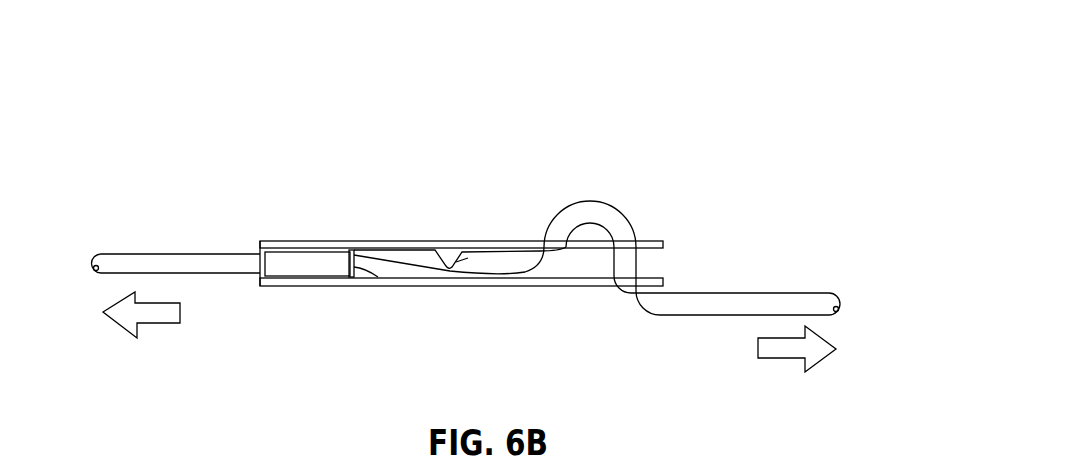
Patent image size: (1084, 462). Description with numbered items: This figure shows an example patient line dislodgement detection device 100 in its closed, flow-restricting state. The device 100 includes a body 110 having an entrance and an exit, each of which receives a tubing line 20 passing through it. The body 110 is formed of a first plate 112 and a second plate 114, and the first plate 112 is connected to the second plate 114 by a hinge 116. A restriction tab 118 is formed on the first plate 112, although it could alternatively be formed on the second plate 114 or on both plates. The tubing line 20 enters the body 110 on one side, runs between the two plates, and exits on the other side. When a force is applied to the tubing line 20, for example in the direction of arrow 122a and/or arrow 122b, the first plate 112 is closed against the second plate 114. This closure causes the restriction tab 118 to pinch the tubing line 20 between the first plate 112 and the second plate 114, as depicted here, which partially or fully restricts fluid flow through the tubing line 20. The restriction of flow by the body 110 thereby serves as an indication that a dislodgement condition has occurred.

The tubing line 20 is at (168, 254).
The patient line dislodgement detection device 100 is at (762, 177).
The body 110 is at (360, 241).
The first plate 112 is at (655, 240).
The second plate 114 is at (573, 287).
The hinge 116 is at (383, 279).
The restriction tab 118 is at (486, 241).
The arrow 122a is at (153, 320).
The arrow 122b is at (785, 359).